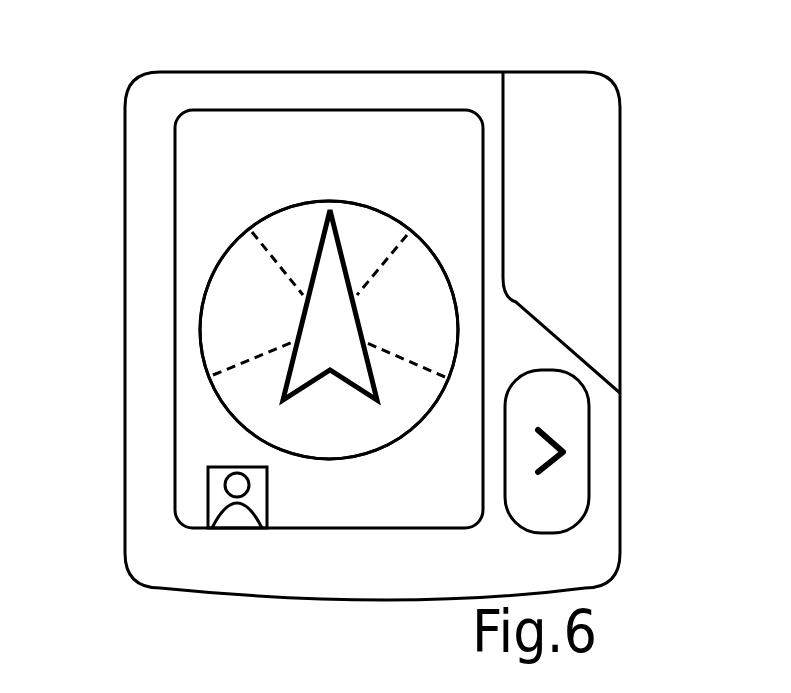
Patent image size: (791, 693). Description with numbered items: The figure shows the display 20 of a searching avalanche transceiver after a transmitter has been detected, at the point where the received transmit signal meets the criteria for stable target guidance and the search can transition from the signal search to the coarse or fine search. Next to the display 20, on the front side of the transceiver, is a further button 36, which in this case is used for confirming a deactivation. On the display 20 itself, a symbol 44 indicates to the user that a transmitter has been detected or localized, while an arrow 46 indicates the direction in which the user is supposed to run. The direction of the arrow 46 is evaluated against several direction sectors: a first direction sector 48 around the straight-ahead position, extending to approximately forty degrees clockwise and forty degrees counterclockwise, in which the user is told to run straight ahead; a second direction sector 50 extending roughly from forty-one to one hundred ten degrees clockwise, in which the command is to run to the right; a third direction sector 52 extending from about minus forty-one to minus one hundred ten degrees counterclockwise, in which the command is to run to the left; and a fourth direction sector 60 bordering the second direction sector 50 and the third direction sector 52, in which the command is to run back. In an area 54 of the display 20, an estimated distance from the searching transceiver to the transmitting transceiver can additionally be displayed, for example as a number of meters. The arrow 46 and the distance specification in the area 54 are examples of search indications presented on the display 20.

The display 20 is at (204, 210).
The further button 36 is at (563, 412).
The symbol 44 is at (210, 493).
The arrow 46 is at (347, 320).
The first direction sector 48 is at (385, 228).
The second direction sector 50 is at (413, 290).
The third direction sector 52 is at (230, 303).
The area 54 is at (413, 153).
The fourth direction sector 60 is at (285, 423).